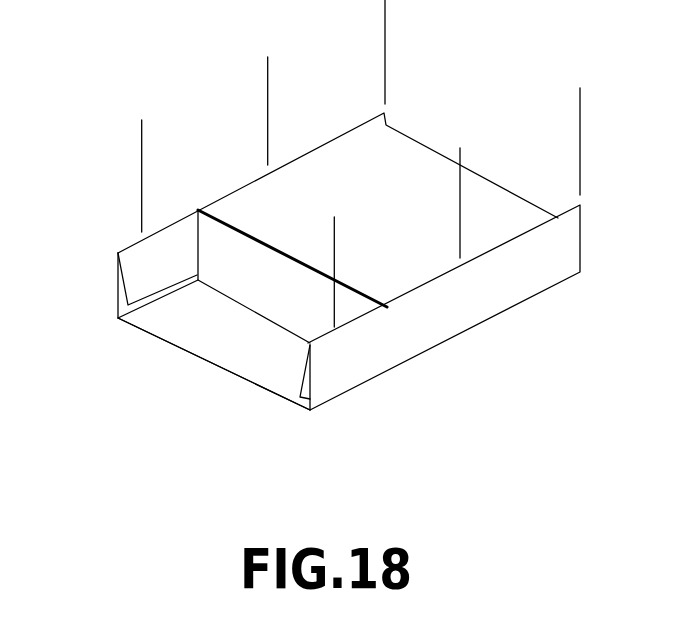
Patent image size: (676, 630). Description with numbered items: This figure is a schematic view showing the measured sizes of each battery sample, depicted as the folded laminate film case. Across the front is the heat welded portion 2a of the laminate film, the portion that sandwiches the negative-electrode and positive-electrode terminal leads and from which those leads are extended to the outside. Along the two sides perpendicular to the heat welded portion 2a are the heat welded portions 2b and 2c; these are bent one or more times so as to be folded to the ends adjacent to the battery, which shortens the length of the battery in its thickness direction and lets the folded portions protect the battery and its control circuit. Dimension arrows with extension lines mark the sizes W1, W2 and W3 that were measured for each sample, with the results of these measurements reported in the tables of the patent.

The heat welded portion 2a is at (198, 345).
The heat welded portion 2b is at (130, 248).
The heat welded portion 2c is at (473, 312).
The size W1 is at (334, 222).
The size W2 is at (460, 165).
The size W3 is at (580, 98).